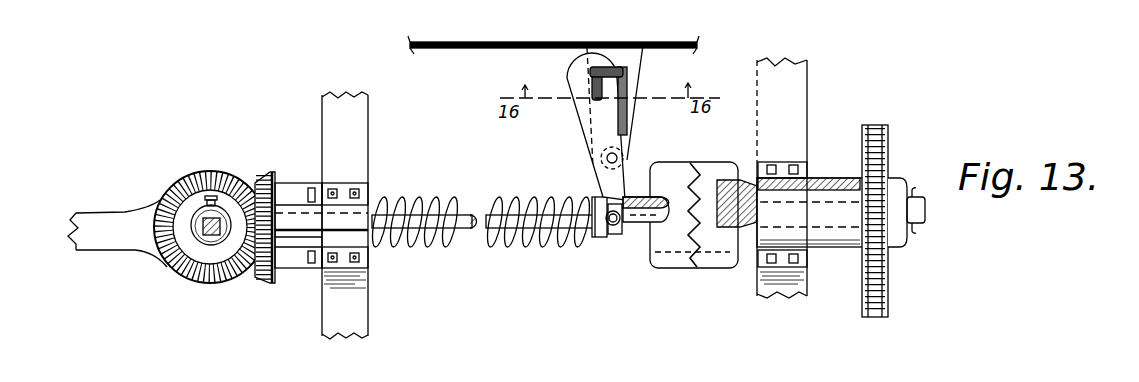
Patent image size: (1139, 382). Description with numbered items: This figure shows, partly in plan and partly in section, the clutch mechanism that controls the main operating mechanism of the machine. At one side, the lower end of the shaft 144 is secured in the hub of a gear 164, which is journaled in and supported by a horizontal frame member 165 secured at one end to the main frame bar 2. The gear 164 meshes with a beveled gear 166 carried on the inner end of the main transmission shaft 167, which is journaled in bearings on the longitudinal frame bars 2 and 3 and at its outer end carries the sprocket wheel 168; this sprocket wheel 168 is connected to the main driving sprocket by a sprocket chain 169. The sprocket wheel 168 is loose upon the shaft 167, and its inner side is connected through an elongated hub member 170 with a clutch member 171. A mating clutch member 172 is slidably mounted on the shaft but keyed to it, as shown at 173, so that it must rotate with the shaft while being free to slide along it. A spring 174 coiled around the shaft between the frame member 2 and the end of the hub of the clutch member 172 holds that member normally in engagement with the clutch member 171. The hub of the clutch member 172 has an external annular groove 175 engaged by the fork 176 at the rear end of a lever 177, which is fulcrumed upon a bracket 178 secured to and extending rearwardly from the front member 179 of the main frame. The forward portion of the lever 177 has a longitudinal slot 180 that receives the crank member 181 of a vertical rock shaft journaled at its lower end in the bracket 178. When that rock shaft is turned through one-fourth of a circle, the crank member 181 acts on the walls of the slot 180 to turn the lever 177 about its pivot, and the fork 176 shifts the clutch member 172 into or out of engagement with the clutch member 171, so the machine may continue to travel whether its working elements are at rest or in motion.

The longitudinal bar 2 is at (361, 306).
The longitudinal bar 3 is at (768, 290).
The shaft 144 is at (212, 230).
The gear 164 is at (211, 188).
The horizontal frame member 165 is at (97, 222).
The beveled gear 166 is at (285, 162).
The main transmission shaft 167 is at (472, 214).
The sprocket wheel 168 is at (888, 133).
The sprocket chain 169 is at (888, 291).
The elongated hub member 170 is at (744, 179).
The clutch member 171 is at (738, 166).
The mating clutch member 172 is at (656, 268).
The key 173 is at (647, 176).
The spring 174 is at (506, 246).
The external annular groove 175 is at (613, 239).
The fork 176 is at (596, 202).
The lever 177 is at (590, 121).
The bracket 178 is at (629, 89).
The front member 179 is at (449, 52).
The longitudinal slot 180 is at (592, 84).
The crank member 181 is at (625, 73).